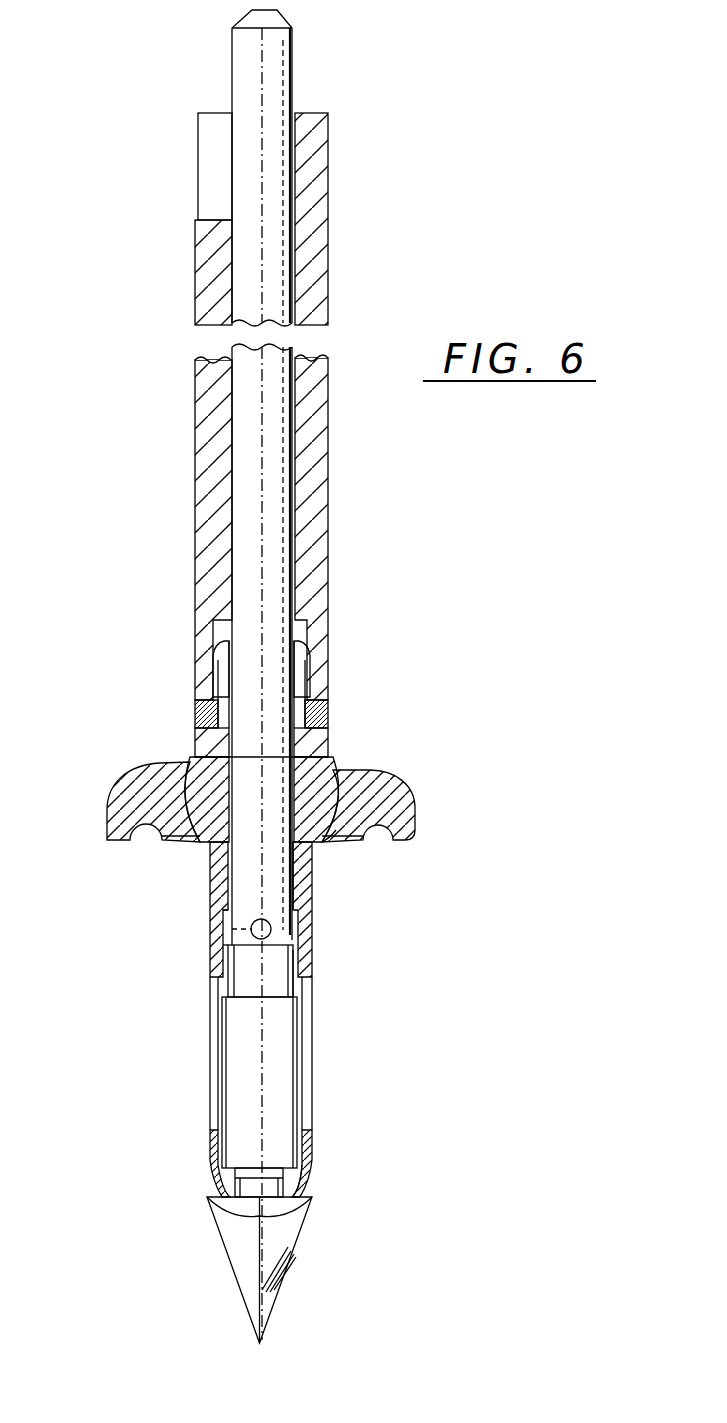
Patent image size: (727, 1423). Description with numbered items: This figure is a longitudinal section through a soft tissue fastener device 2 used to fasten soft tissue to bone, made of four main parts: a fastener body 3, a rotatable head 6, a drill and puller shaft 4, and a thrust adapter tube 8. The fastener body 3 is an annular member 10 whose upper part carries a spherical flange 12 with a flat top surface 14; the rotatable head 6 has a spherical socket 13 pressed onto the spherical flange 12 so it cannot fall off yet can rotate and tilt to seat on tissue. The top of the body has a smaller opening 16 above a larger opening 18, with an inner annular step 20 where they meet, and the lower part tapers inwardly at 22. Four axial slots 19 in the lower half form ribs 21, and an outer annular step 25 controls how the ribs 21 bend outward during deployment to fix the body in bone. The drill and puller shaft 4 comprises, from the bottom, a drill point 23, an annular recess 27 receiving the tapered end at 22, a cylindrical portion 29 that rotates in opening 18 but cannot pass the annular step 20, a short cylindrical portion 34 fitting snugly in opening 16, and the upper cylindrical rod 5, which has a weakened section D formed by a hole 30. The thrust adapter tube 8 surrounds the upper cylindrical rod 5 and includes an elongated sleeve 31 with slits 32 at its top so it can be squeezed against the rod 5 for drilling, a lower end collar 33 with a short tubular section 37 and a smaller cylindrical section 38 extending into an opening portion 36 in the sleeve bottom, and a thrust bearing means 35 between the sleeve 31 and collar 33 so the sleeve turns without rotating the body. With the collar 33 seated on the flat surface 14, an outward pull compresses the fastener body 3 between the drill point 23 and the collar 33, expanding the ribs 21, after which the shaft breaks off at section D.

The soft tissue fastener device 2 is at (66, 808).
The fastener body 3 is at (323, 908).
The drill and puller shaft 4 is at (305, 66).
The upper cylindrical rod 5 is at (243, 77).
The rotatable head 6 is at (418, 782).
The thrust adapter tube 8 is at (341, 247).
The annular member 10 is at (215, 965).
The spherical flange 12 is at (193, 762).
The spherical socket 13 is at (316, 838).
The flat top surface 14 is at (320, 757).
The opening 16 is at (298, 855).
The opening 18 is at (217, 952).
The axial slots 19 is at (217, 1045).
The inner annular step 20 is at (270, 937).
The ribs 21 is at (210, 1012).
The inward taper 22 is at (215, 1165).
The drill point 23 is at (285, 1270).
The outer annular step 25 is at (213, 1148).
The annular recess 27 is at (302, 1178).
The cylindrical portion 29 is at (233, 1082).
The hole 30 is at (281, 955).
The elongated sleeve 31 is at (315, 543).
The slits 32 is at (212, 148).
The lower end collar 33 is at (330, 738).
The short cylindrical portion 34 is at (281, 975).
The thrust bearing means 35 is at (338, 704).
The opening portion 36 is at (302, 628).
The short tubular section 37 is at (197, 738).
The smaller cylindrical section 38 is at (210, 670).
The weakened section D is at (236, 928).